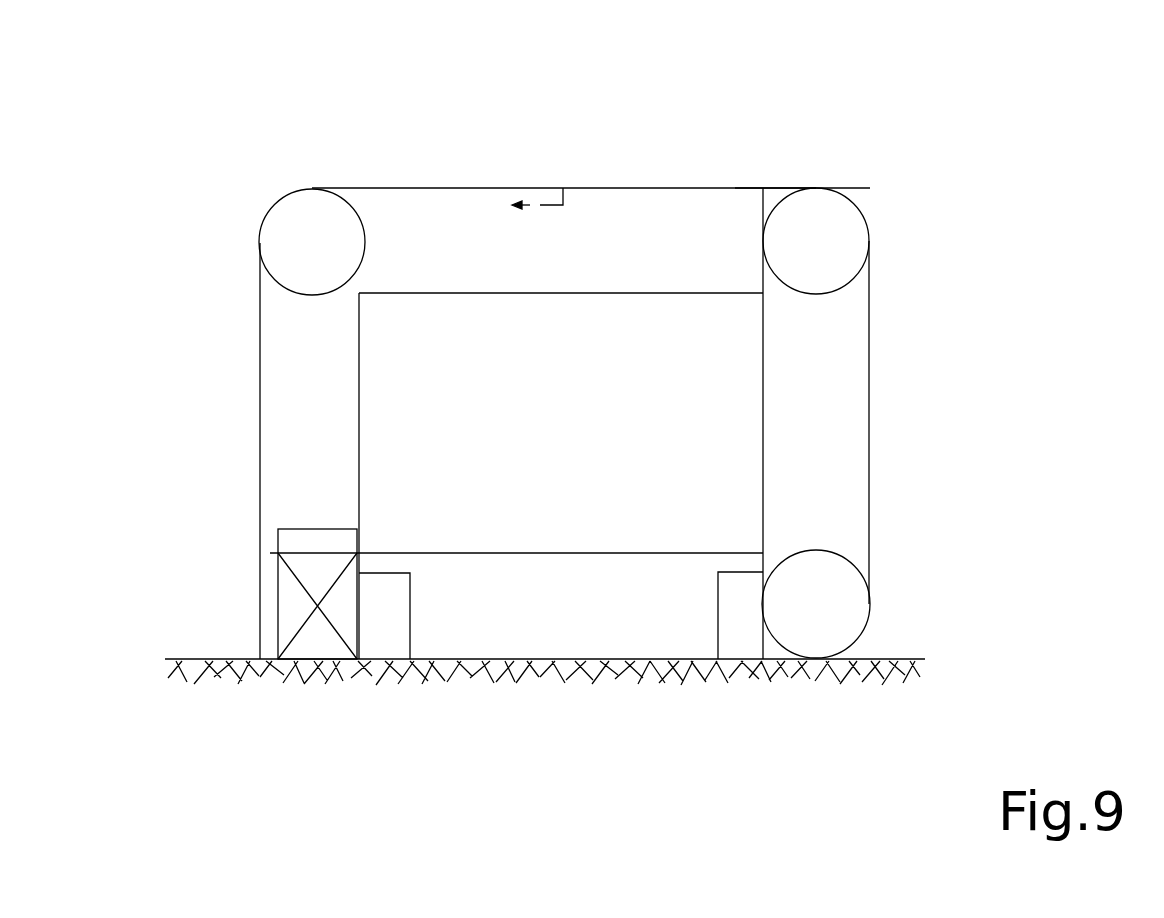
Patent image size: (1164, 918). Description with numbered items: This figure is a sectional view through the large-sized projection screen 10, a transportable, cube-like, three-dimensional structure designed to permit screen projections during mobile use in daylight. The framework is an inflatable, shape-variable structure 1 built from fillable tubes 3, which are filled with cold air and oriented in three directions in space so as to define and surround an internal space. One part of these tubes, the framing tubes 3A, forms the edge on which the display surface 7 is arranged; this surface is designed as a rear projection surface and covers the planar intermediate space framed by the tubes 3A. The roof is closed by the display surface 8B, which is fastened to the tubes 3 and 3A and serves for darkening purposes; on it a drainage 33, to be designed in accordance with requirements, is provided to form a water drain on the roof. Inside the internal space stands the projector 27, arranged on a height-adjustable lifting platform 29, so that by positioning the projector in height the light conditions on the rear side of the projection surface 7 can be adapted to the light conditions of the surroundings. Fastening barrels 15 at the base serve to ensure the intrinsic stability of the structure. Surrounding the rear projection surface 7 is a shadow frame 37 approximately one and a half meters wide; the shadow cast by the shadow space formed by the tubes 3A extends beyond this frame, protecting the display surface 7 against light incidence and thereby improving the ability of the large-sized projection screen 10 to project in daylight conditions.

The structure 1 is at (282, 200).
The fillable tubes 3 is at (433, 205).
The framing tubes 3A is at (842, 215).
The display surface 7 is at (760, 404).
The display surface 8B is at (733, 188).
The large-sized projection screen 10 is at (912, 94).
The fastening barrels 15 is at (393, 608).
The projector 27 is at (345, 540).
The lifting platform 29 is at (295, 595).
The drainage 33 is at (563, 205).
The shadow frame 37 is at (760, 312).